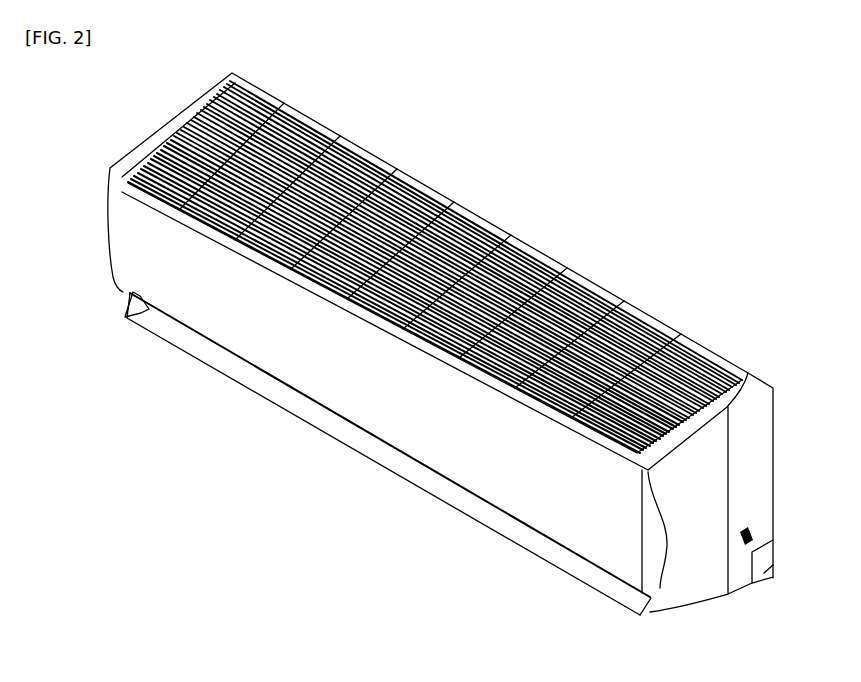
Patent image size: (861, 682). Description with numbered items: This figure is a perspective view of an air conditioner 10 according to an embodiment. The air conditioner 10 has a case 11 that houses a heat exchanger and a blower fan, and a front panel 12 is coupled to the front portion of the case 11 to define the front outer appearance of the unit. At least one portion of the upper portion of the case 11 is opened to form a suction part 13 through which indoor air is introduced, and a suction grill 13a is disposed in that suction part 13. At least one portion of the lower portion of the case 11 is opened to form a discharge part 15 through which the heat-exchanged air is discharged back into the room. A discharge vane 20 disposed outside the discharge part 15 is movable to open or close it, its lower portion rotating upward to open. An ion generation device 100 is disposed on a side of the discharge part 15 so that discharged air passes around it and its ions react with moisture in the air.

The air conditioner 10 is at (562, 205).
The case 11 is at (750, 492).
The front panel 12 is at (520, 485).
The suction part 13 is at (324, 167).
The suction grill 13a is at (464, 244).
The discharge part 15 is at (666, 607).
The discharge vane 20 is at (543, 546).
The ion generation device 100 is at (137, 320).